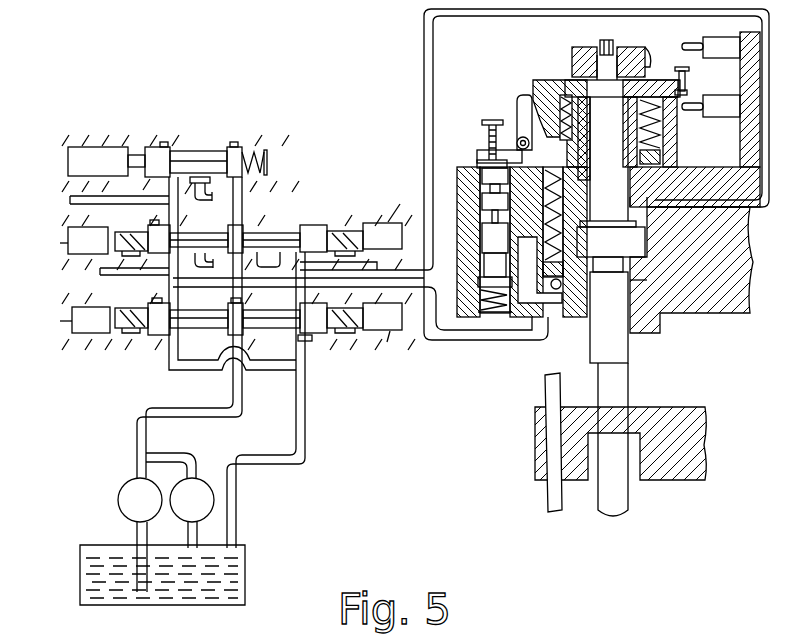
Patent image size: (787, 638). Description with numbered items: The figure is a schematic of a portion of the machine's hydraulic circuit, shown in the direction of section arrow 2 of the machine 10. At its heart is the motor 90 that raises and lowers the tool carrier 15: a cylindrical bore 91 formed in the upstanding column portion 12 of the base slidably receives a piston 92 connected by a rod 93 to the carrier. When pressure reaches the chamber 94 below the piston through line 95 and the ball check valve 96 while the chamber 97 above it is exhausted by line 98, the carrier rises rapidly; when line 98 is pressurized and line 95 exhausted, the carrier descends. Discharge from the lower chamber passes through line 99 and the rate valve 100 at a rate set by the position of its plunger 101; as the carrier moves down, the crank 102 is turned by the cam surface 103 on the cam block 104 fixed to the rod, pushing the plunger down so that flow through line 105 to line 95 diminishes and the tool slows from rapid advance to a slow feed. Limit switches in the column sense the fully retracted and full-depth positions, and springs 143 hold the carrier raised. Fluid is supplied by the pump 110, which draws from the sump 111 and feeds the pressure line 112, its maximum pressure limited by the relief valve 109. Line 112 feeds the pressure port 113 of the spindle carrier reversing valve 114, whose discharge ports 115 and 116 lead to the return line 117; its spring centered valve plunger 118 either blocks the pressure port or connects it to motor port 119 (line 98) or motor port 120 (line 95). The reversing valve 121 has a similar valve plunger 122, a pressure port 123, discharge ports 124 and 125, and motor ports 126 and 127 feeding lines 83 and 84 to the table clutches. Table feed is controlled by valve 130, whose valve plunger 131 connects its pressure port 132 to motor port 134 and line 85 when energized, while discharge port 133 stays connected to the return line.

The section line 2 is at (265, 0).
The machine 10 is at (390, 0).
The upstanding column portion 12 is at (697, 270).
The tool carrier 15 is at (660, 407).
The line 83 is at (119, 276).
The line 84 is at (377, 267).
The line 85 is at (76, 198).
The motor 90 is at (661, 264).
The cylindrical bore 91 is at (641, 281).
The piston 92 is at (656, 246).
The rod 93 is at (630, 388).
The chamber 94 is at (647, 289).
The line 95 is at (457, 343).
The ball check valve 96 is at (560, 288).
The chamber 97 is at (648, 191).
The line 98 is at (433, 58).
The line 99 is at (562, 239).
The rate valve 100 is at (531, 229).
The plunger 101 is at (474, 276).
The crank 102 is at (518, 108).
The cam surface 103 is at (538, 80).
The cam block 104 is at (650, 78).
The line 105 is at (565, 270).
The relief valve 109 is at (200, 479).
The pump 110 is at (118, 497).
The sump 111 is at (245, 581).
The pressure line 112 is at (137, 426).
The pressure port 113 is at (242, 341).
The spindle carrier reversing valve 114 is at (124, 349).
The discharge port 115 is at (167, 340).
The discharge port 116 is at (304, 338).
The return line 117 is at (268, 465).
The valve plunger 118 is at (200, 322).
The motor port 119 is at (200, 306).
The motor port 120 is at (289, 310).
The reversing valve 121 is at (72, 271).
The valve plunger 122 is at (261, 243).
The pressure port 123 is at (237, 226).
The discharge port 124 is at (170, 252).
The discharge port 125 is at (331, 229).
The motor port 126 is at (179, 233).
The motor port 127 is at (266, 258).
The valve 130 is at (57, 145).
The valve plunger 131 is at (190, 147).
The pressure port 132 is at (247, 178).
The discharge port 133 is at (163, 176).
The motor port 134 is at (176, 178).
The springs 143 is at (644, 143).